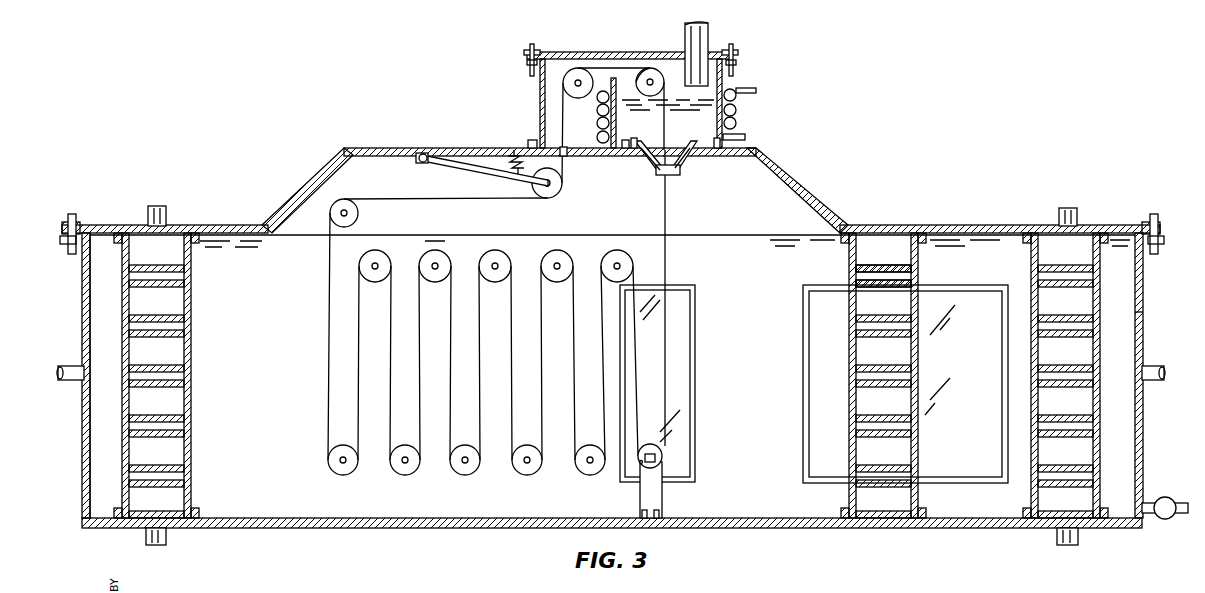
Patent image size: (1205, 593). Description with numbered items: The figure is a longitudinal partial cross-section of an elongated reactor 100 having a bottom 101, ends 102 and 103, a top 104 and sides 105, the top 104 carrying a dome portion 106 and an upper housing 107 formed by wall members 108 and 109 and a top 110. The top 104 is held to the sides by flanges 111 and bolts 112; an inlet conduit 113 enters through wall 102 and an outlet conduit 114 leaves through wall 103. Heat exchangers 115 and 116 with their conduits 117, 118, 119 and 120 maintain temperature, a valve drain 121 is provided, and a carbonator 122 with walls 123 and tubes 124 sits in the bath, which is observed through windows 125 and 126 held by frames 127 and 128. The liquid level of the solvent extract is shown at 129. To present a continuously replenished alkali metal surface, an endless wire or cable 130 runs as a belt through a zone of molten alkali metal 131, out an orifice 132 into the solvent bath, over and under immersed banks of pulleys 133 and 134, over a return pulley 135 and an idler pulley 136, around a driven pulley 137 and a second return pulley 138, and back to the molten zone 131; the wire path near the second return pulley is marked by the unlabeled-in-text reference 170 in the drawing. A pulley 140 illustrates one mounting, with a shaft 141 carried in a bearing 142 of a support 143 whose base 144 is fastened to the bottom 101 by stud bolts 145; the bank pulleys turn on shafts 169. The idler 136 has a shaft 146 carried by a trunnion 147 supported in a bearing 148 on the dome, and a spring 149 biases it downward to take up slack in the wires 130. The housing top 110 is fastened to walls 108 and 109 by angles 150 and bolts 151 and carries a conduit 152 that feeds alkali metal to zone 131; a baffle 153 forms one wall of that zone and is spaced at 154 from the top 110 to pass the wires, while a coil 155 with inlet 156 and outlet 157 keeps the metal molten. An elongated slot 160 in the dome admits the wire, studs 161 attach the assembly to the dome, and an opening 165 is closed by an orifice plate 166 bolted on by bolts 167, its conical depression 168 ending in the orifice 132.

The elongated reactor 100 is at (1203, 323).
The bottom 101 is at (372, 526).
The end 102 is at (84, 458).
The end 103 is at (1144, 446).
The top 104 is at (214, 229).
The sides 105 is at (92, 275).
The dome portion 106 is at (340, 149).
The upper housing 107 is at (528, 102).
The wall member 108 is at (540, 118).
The wall member 109 is at (723, 82).
The top 110 is at (537, 48).
The flanges 111 is at (62, 241).
The bolts 112 is at (68, 220).
The inlet conduit 113 is at (72, 368).
The outlet conduit 114 is at (1158, 368).
The heat exchanger 115 is at (190, 301).
The heat exchanger 116 is at (1031, 258).
The conduit 117 is at (166, 215).
The conduit 118 is at (166, 538).
The conduit 119 is at (1077, 214).
The conduit 120 is at (1078, 539).
The valve drain 121 is at (1170, 518).
The carbonator 122 is at (918, 258).
The walls 123 is at (850, 253).
The tubes 124 is at (850, 274).
The window 125 is at (810, 345).
The window 126 is at (680, 340).
The frame 127 is at (803, 302).
The frame 128 is at (695, 290).
The liquid level 129 is at (532, 235).
The endless wire or cable 130 is at (666, 215).
The zone of molten alkali metal 131 is at (668, 116).
The orifice 132 is at (672, 174).
The top bank of pulleys 133 is at (612, 258).
The bottom bank of pulleys 134 is at (580, 472).
The return pulley 135 is at (359, 213).
The idler pulley 136 is at (558, 193).
The driven pulley 137 is at (562, 83).
The second return pulley 138 is at (652, 68).
The pulley 140 is at (662, 449).
The shaft 141 is at (656, 458).
The bearing 142 is at (640, 463).
The support 143 is at (663, 490).
The base 144 is at (660, 514).
The stud bolts 145 is at (642, 514).
The shaft 146 is at (551, 183).
The trunnion 147 is at (447, 168).
The bearing 148 is at (418, 159).
The spring 149 is at (510, 166).
The angles 150 is at (736, 66).
The bolts 151 is at (738, 50).
The conduit 152 is at (706, 26).
The baffle 153 is at (603, 90).
The space 154 is at (614, 76).
The coil 155 is at (737, 110).
The inlet 156 is at (756, 91).
The outlet 157 is at (745, 136).
The elongated slot 160 is at (565, 152).
The studs 161 is at (530, 142).
The opening 165 is at (694, 150).
The orifice plate 166 is at (636, 150).
The bolts 167 is at (634, 140).
The conical depression 168 is at (646, 160).
The shafts 169 is at (344, 216).
The film guide 170 is at (647, 66).